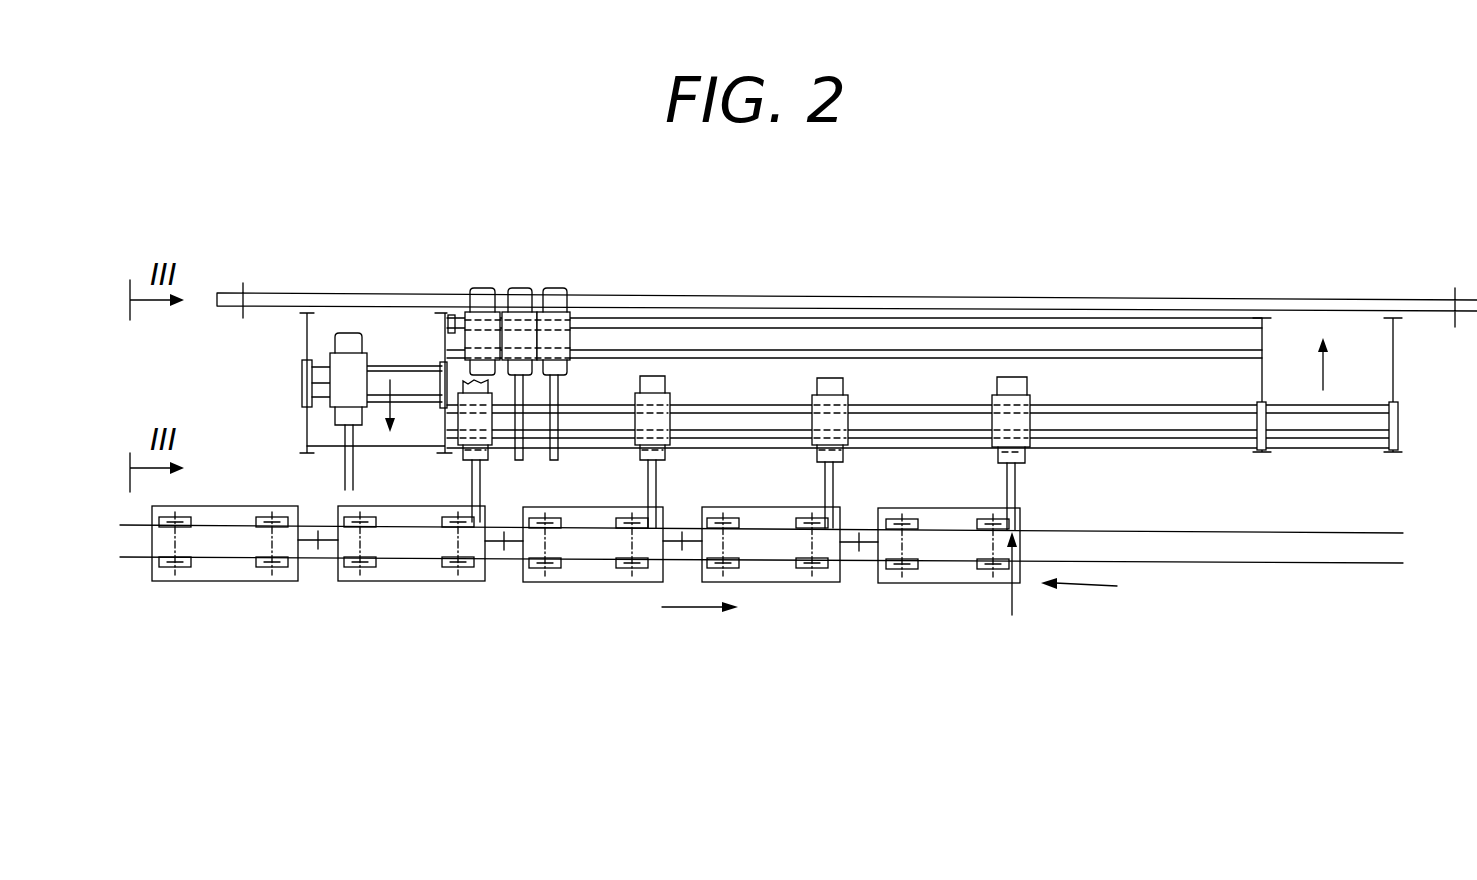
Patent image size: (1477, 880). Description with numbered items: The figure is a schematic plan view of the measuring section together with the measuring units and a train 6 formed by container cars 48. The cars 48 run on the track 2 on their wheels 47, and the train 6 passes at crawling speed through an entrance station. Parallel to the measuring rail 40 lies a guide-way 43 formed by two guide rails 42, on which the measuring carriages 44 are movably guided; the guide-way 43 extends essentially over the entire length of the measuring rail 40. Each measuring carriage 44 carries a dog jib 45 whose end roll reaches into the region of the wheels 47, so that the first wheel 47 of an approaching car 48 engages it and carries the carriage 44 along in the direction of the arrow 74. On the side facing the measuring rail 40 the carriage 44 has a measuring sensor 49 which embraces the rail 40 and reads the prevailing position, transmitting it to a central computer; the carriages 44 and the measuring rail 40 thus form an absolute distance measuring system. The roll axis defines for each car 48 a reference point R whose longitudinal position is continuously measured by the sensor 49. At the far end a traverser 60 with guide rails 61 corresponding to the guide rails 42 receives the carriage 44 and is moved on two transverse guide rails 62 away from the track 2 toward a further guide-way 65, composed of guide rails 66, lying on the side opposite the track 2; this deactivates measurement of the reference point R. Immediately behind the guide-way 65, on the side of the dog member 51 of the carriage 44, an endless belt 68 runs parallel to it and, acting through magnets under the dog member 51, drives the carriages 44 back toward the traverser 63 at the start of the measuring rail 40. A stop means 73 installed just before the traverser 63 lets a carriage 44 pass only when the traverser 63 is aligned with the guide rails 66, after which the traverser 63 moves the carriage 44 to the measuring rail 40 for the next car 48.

The track 2 is at (1410, 522).
The train 6 is at (1090, 603).
The measuring rail 40 is at (1193, 448).
The guide rails 42 is at (700, 416).
The guide-way 43 is at (708, 433).
The measuring carriage 44 is at (665, 431).
The dog jib 45 is at (1016, 484).
The wheels 47 is at (455, 522).
The container car 48 is at (948, 575).
The measuring sensor 49 is at (998, 455).
The dog member 51 is at (1017, 385).
The traverser 60 is at (1353, 458).
The guide rails 61 is at (1317, 433).
The guide rails 62 is at (1258, 377).
The traverser 63 is at (408, 345).
The guide-way 65 is at (872, 338).
The guide rails 66 is at (985, 353).
The endless belt 68 is at (1222, 304).
The stop means 73 is at (452, 330).
The arrow 74 is at (688, 612).
The reference point R is at (1014, 595).